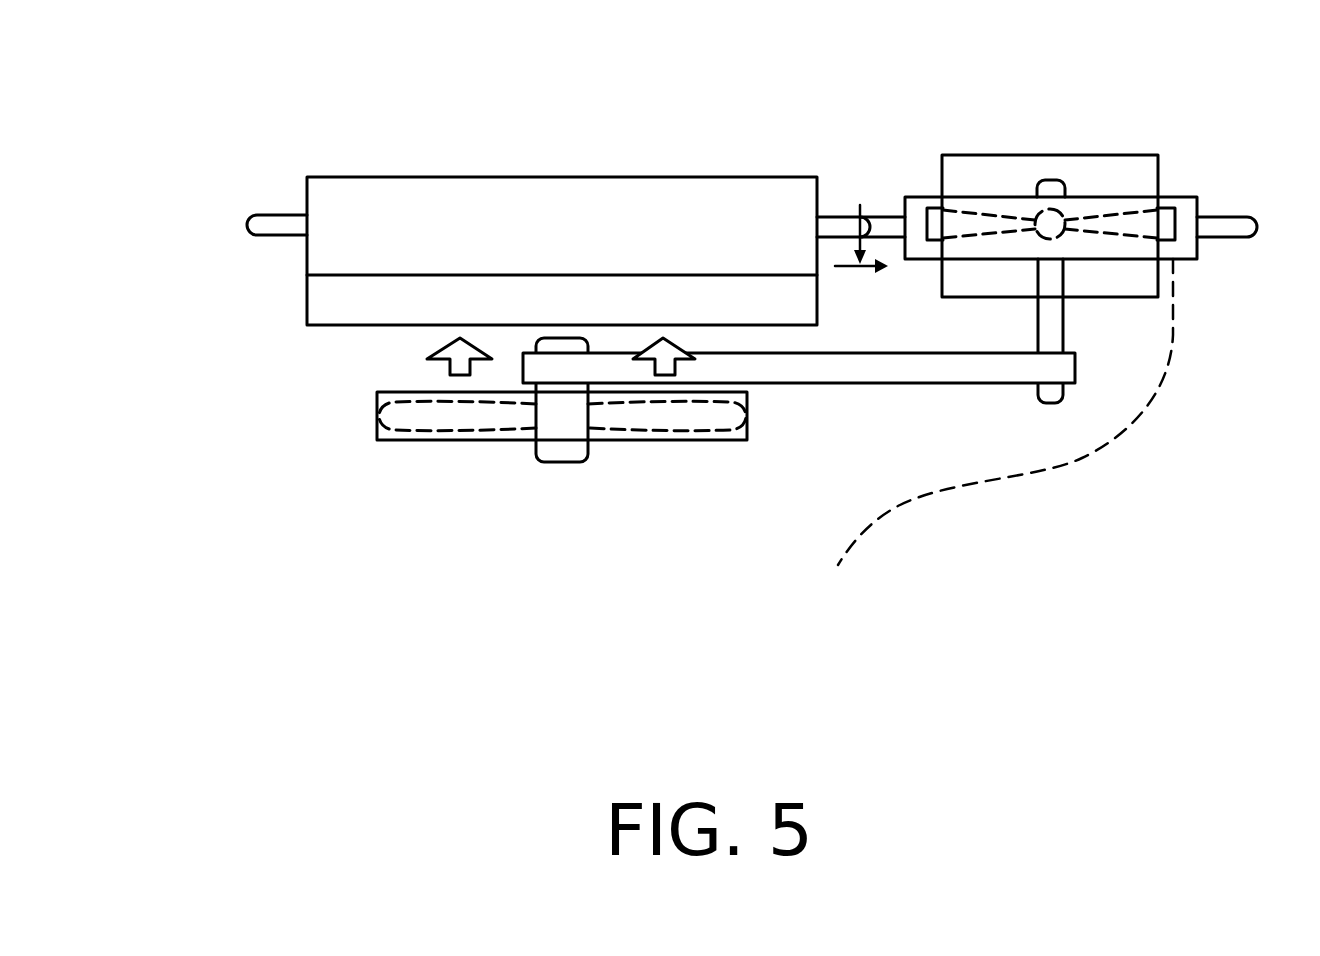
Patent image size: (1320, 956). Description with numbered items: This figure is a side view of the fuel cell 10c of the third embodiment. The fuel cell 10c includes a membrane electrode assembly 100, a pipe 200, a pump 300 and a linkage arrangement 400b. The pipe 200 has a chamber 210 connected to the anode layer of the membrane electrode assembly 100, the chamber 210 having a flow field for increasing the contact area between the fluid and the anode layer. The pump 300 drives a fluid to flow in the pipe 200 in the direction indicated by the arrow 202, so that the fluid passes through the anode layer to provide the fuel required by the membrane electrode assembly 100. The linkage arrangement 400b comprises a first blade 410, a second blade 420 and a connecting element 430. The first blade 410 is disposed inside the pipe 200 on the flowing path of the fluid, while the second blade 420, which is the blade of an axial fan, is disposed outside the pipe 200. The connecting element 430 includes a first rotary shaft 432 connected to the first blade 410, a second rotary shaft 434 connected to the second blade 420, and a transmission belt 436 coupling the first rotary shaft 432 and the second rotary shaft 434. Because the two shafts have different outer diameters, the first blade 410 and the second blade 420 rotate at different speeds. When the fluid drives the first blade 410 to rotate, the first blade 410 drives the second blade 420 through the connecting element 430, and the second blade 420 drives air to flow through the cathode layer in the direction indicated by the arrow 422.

The fuel cell 10c is at (727, 358).
The membrane electrode assembly 100 is at (340, 305).
The chamber 210 is at (415, 218).
The pipe 200 is at (270, 222).
The arrow 202 is at (860, 205).
The pump 300 is at (1137, 167).
The linkage arrangement 400b is at (698, 479).
The first blade 410 is at (979, 436).
The second blade 420 is at (467, 423).
The arrow 422 is at (428, 360).
The connecting element 430 is at (799, 442).
The first rotary shaft 432 is at (1052, 392).
The second rotary shaft 434 is at (573, 452).
The transmission belt 436 is at (818, 372).